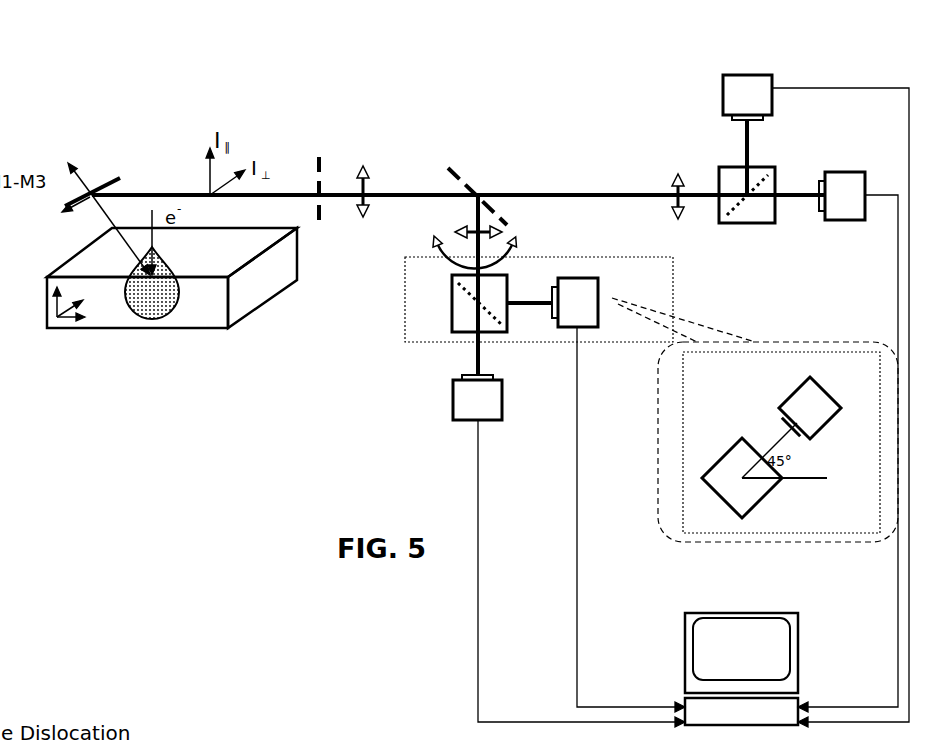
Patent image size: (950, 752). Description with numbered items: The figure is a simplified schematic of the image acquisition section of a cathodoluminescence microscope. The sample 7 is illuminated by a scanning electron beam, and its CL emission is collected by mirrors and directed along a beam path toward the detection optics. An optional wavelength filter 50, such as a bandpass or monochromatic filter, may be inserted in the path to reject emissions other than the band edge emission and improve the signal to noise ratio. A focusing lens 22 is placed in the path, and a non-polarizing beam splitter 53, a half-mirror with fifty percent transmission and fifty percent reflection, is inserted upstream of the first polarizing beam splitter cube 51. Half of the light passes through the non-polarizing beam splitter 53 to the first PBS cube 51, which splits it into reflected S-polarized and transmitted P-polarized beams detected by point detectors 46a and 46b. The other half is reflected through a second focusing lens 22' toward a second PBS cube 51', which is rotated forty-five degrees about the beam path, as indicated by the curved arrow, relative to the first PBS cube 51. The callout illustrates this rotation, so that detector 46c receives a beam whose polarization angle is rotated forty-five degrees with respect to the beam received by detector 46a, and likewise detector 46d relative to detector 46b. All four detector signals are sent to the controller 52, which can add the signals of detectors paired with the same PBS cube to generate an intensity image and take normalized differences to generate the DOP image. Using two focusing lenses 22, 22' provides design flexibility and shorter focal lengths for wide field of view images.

The sample 7 is at (256, 297).
The wavelength filter 50 is at (319, 150).
The focusing lens 22 is at (483, 153).
The non-polarizing beam splitter 53 is at (448, 163).
The focusing lens 22' is at (455, 237).
The polarizing beam splitter cube 51 is at (725, 175).
The second polarizing beam splitter cube 51' is at (596, 396).
The light detector 46a is at (816, 401).
The light detector 46b is at (848, 442).
The light detector 46c is at (696, 495).
The light detector 46d is at (569, 551).
The controller 52 is at (732, 660).